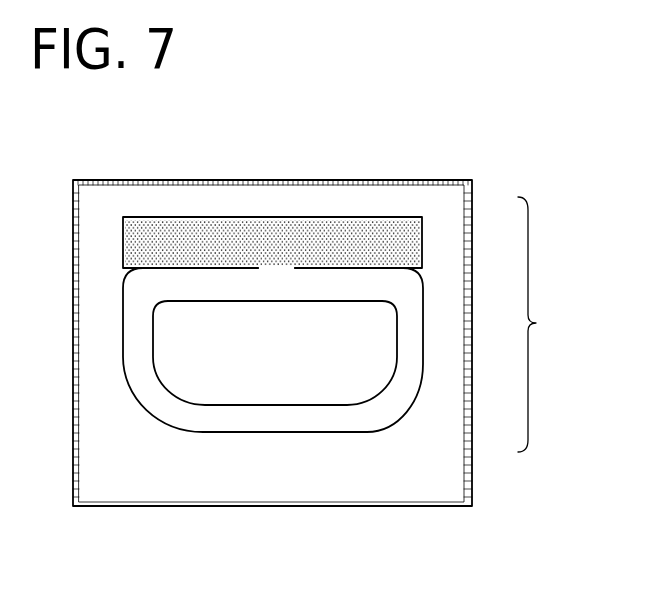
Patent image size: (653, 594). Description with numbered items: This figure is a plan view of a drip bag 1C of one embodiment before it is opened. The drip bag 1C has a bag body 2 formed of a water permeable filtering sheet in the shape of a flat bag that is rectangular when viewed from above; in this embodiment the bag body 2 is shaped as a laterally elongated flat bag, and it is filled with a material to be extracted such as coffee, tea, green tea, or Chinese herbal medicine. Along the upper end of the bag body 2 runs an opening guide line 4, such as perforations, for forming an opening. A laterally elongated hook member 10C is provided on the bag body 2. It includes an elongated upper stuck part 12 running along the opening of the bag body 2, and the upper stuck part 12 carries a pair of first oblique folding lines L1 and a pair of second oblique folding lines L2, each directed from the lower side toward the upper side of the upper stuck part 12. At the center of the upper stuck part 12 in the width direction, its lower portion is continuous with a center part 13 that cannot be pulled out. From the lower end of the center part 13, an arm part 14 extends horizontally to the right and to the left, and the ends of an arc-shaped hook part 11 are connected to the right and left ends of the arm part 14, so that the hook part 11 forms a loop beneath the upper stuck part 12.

The drip bag 1C is at (616, 567).
The bag body 2 is at (438, 485).
The opening guide line 4 is at (133, 212).
The hook member 10C is at (553, 324).
The hook part 11 is at (353, 432).
The upper stuck part 12 is at (422, 236).
The center part 13 is at (283, 285).
The arm part 14 is at (332, 292).
The first oblique folding lines L1 is at (240, 232).
The second oblique folding lines L2 is at (184, 232).